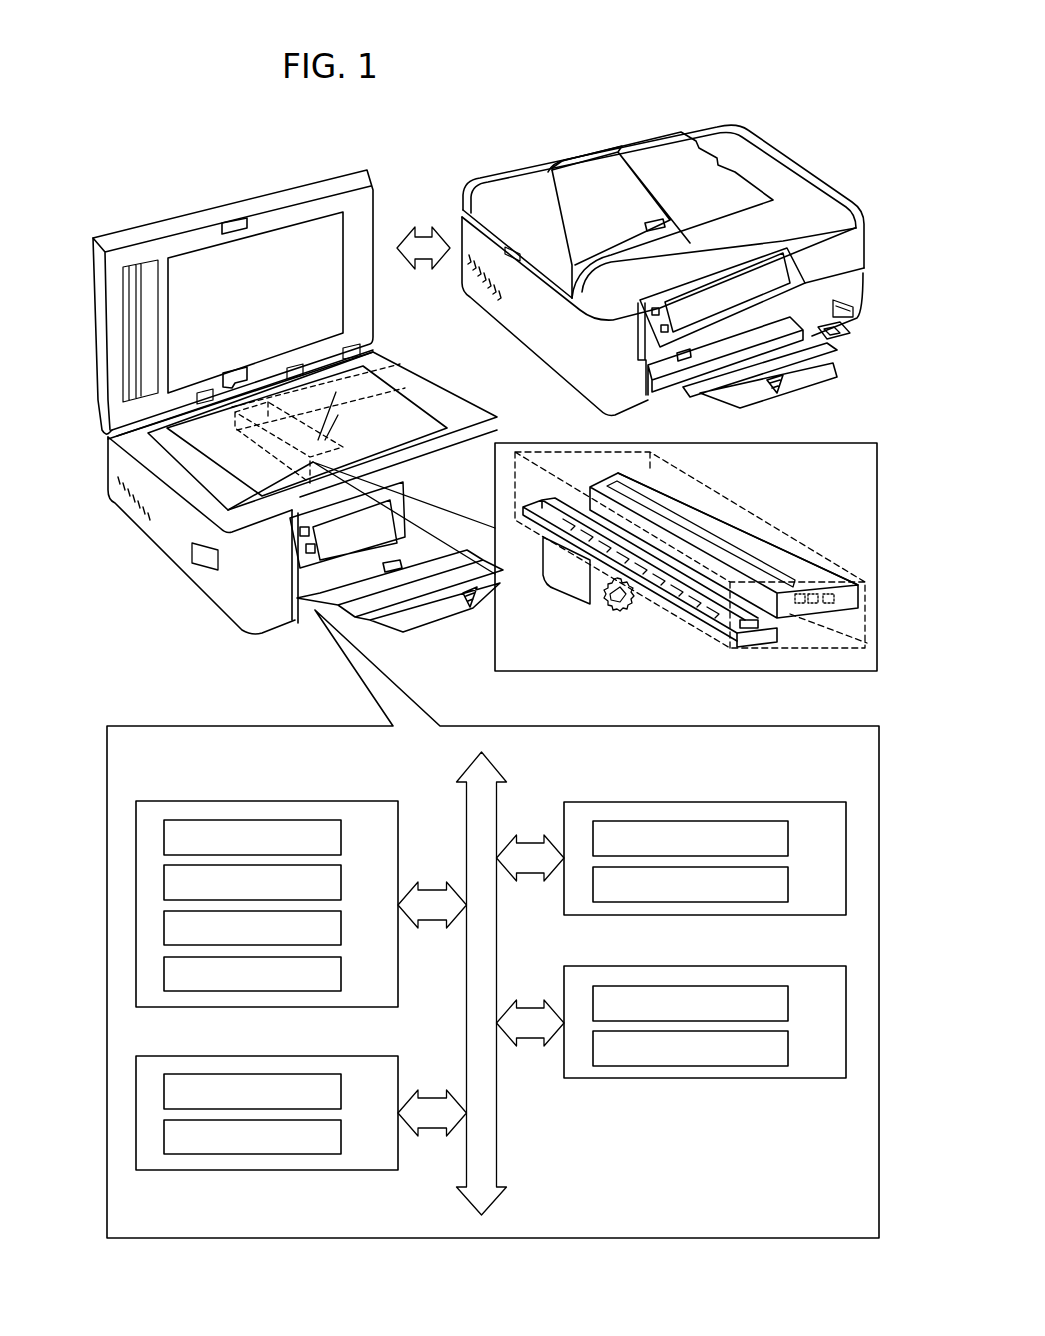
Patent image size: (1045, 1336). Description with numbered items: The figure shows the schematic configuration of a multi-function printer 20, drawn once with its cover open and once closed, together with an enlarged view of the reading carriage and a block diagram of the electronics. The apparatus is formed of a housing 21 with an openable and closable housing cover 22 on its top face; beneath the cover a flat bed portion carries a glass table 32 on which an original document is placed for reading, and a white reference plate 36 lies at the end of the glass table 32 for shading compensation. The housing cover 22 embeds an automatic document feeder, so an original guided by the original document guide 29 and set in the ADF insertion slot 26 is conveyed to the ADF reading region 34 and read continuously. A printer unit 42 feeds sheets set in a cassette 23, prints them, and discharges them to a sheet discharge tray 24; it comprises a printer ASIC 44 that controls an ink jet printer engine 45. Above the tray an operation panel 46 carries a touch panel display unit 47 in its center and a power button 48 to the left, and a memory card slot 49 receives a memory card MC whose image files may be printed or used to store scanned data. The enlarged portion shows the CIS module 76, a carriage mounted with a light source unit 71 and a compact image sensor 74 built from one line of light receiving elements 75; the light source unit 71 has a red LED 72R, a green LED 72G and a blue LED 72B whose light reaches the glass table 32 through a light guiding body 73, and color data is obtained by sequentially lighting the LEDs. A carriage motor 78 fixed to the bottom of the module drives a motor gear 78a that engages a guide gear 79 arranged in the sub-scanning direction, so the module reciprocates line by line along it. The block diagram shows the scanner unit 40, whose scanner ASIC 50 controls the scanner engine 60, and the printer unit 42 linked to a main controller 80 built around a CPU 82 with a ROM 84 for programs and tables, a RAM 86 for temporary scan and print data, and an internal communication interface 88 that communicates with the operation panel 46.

The multi-function printer 20 is at (187, 183).
The housing 21 is at (793, 162).
The housing cover 22 is at (323, 233).
The cassette 23 is at (665, 393).
The sheet discharge tray 24 is at (743, 393).
The ADF insertion slot 26 is at (593, 175).
The original document guide 29 is at (660, 224).
The glass table 32 is at (353, 370).
The ADF reading region 34 is at (187, 460).
The white reference plate 36 is at (420, 410).
The scanner unit 40 is at (793, 802).
The printer unit 42 is at (793, 966).
The printer ASIC 44 is at (788, 1001).
The printer engine 45 is at (788, 1046).
The operation panel 46 is at (345, 1056).
The display unit 47 is at (673, 317).
The power button 48 is at (653, 312).
The memory card slot 49 is at (845, 320).
The memory card MC is at (843, 337).
The scanner ASIC 50 is at (788, 836).
The scanner engine 60 is at (788, 882).
The light source unit 71 is at (770, 532).
The red LED 72R is at (797, 604).
The green LED 72G is at (815, 604).
The blue LED 72B is at (833, 604).
The light guiding body 73 is at (690, 517).
The compact image sensor (CIS) 74 is at (710, 627).
The light receiving elements 75 is at (692, 590).
The CIS module 76 is at (285, 465).
The carriage motor 78 is at (557, 583).
The motor gear 78a is at (612, 618).
The guide gear 79 is at (383, 412).
The main controller 80 is at (345, 802).
The CPU 82 is at (341, 836).
The ROM 84 is at (341, 881).
The RAM 86 is at (341, 927).
The internal communication interface 88 is at (341, 973).